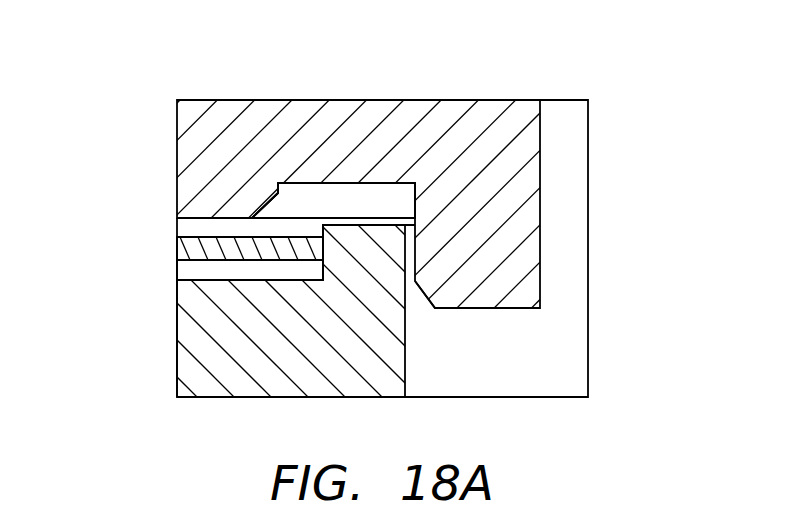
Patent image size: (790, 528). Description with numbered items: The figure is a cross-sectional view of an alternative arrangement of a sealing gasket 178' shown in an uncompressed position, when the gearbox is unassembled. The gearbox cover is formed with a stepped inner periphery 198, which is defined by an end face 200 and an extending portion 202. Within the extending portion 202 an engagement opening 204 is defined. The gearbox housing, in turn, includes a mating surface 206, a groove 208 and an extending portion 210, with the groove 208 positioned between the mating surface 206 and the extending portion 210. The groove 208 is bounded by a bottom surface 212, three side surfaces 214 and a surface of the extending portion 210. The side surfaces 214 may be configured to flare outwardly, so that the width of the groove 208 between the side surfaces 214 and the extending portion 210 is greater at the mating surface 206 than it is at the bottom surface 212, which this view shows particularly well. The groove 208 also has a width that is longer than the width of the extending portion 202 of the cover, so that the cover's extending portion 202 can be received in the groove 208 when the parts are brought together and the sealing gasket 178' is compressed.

The sealing gasket 178' is at (203, 166).
The stepped inner periphery 198 is at (177, 366).
The end face 200 is at (197, 278).
The extending portion 202 is at (372, 253).
The engagement opening 204 is at (422, 343).
The mating surface 206 is at (262, 218).
The groove 208 is at (387, 205).
The extending portion 210 is at (492, 268).
The bottom surface 212 is at (347, 185).
The side surfaces 214 is at (279, 189).